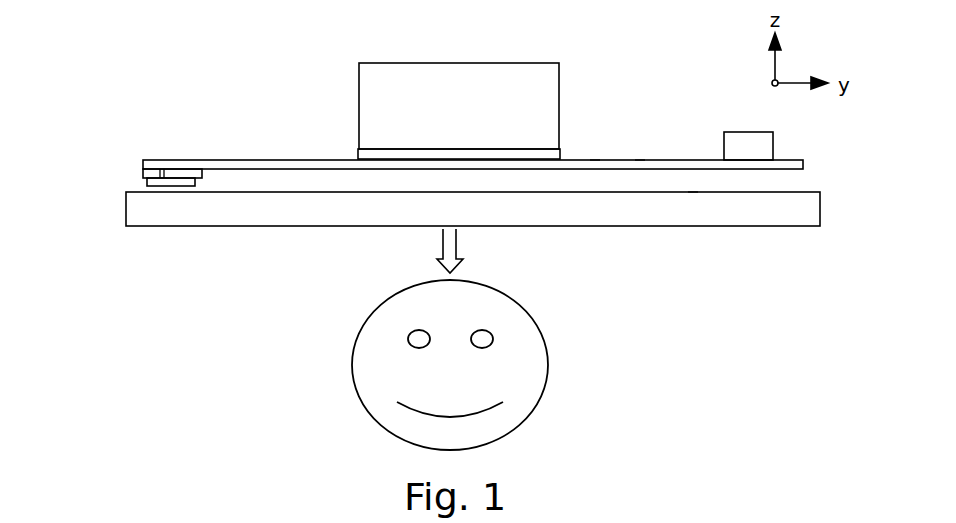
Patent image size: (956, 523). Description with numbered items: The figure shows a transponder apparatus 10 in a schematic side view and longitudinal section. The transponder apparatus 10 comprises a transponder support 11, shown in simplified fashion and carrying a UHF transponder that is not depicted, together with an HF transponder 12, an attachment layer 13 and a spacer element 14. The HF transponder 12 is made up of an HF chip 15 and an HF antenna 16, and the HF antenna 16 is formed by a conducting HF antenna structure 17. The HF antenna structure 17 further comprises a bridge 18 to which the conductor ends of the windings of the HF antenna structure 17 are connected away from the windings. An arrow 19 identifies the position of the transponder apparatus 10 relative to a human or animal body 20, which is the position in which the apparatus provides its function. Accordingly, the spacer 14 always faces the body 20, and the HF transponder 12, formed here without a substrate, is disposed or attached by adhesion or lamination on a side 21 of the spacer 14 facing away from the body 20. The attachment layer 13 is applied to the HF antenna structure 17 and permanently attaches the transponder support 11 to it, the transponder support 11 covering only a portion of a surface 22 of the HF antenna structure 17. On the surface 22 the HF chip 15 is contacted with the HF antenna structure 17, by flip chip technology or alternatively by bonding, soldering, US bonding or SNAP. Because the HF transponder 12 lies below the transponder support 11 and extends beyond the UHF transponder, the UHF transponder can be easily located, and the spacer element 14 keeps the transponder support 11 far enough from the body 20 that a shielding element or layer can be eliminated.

The transponder apparatus 10 is at (150, 72).
The transponder support 11 is at (382, 120).
The HF transponder 12 is at (678, 131).
The attachment layer 13 is at (358, 158).
The spacer element 14 is at (683, 218).
The HF chip 15 is at (765, 141).
The HF antenna 16 is at (595, 157).
The HF antenna structure 17 is at (220, 163).
The bridge 18 is at (141, 171).
The arrow 19 is at (449, 240).
The human or animal body 20 is at (538, 363).
The side of the spacer 21 is at (693, 189).
The surface of the HF antenna structure 22 is at (640, 157).